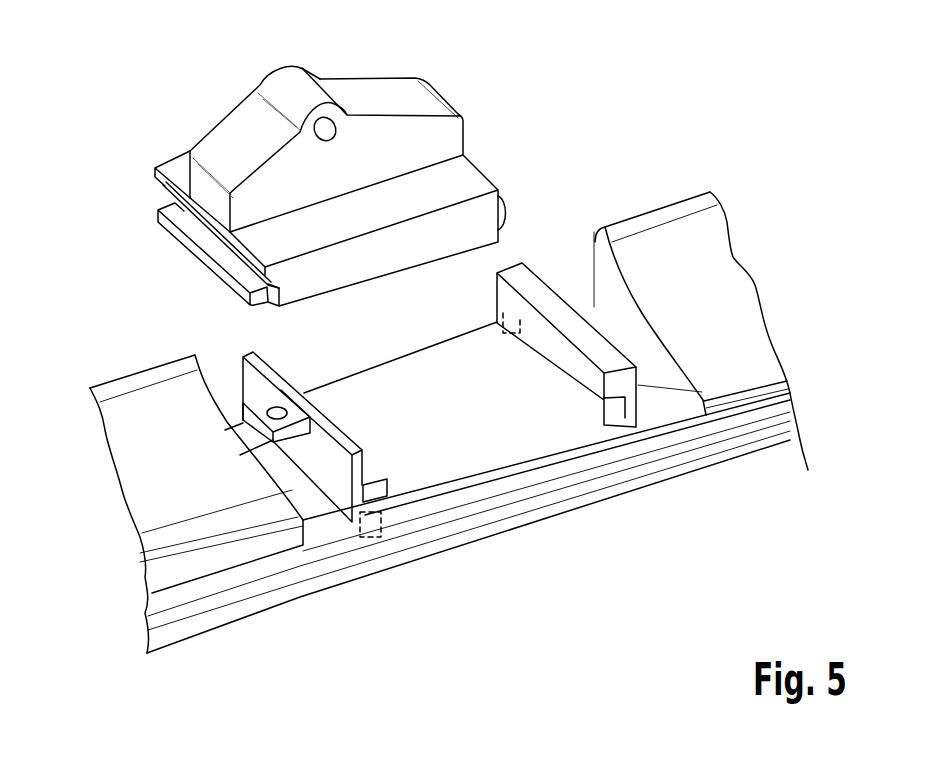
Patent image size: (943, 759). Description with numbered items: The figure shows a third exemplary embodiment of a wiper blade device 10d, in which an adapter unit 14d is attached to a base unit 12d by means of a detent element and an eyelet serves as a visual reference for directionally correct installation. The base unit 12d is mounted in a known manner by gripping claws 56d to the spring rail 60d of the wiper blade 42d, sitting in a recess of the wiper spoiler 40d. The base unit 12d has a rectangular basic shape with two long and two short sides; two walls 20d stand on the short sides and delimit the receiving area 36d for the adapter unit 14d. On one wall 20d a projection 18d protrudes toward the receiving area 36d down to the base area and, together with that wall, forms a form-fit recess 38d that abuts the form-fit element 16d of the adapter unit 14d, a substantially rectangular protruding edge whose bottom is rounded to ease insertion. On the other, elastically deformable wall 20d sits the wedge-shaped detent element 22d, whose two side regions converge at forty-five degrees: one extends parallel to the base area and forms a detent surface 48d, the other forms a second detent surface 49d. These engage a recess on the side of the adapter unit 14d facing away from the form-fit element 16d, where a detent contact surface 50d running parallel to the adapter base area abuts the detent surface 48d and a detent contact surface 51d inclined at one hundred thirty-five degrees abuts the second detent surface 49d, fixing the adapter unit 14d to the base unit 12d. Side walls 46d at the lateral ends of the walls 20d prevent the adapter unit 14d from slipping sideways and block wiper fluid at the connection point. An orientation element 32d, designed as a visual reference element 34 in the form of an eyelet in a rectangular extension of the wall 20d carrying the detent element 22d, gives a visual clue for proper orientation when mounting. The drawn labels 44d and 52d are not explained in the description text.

The wiper blade device 10d is at (735, 128).
The base unit 12d is at (533, 457).
The adapter unit 14d is at (210, 82).
The form-fit element 16d is at (502, 213).
The projection 18d is at (555, 342).
The walls 20d is at (645, 392).
The detent element 22d is at (362, 450).
The orientation element 32d is at (329, 552).
The visual reference element 34 is at (286, 426).
The receiving area 36d is at (478, 457).
The form-fit recess 38d is at (625, 418).
The wiper spoiler 40d is at (177, 403).
The wiper blade 42d is at (767, 430).
The cover plate 44d is at (374, 95).
The side walls 46d is at (388, 482).
The detent surface 48d is at (378, 482).
The second detent surface 49d is at (361, 473).
The detent contact surface 50d is at (236, 268).
The detent contact surface 51d is at (214, 236).
The hole 52d is at (326, 124).
The gripping claws 56d is at (380, 538).
The spring rail 60d is at (678, 410).